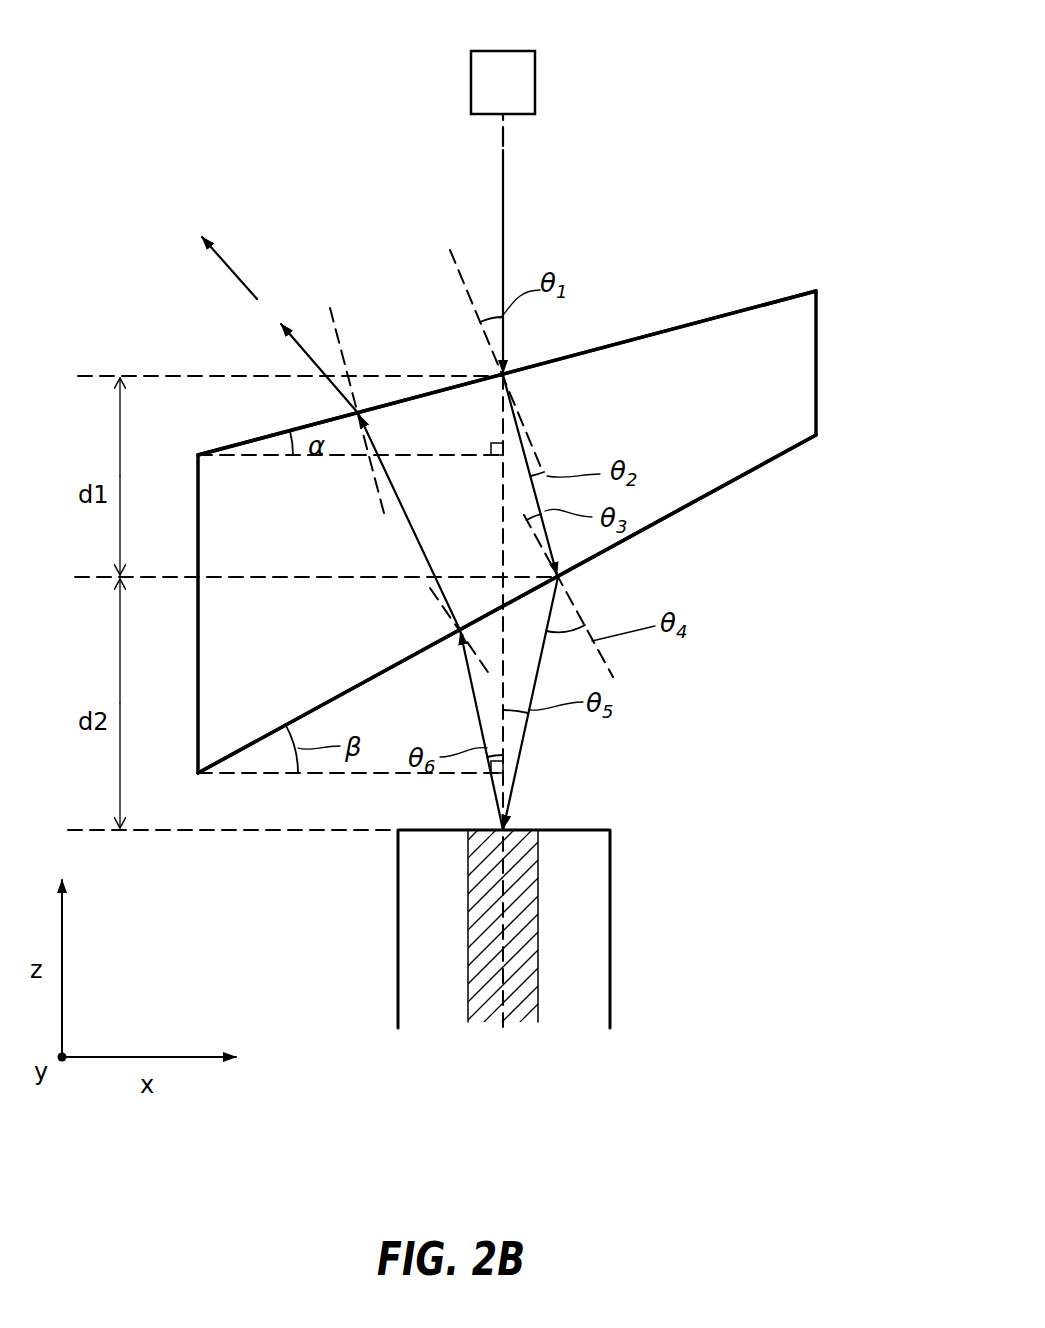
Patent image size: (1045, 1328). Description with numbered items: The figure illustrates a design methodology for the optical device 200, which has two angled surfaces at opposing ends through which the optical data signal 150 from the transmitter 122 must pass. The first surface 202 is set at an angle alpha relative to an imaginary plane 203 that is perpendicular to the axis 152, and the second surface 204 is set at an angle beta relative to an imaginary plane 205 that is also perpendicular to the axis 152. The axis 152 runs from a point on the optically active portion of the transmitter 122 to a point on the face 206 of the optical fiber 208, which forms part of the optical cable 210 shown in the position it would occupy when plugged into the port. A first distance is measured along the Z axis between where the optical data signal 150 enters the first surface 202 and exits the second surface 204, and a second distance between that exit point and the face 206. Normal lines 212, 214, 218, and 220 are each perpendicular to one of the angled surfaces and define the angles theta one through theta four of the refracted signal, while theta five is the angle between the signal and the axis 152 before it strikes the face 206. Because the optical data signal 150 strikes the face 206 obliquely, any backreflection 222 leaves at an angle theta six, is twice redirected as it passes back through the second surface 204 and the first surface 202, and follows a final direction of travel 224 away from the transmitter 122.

The transmitter 122 is at (517, 85).
The optical data signal 150 is at (505, 225).
The axis 152 is at (503, 458).
The optical device 200 is at (775, 360).
The first surface 202 is at (718, 317).
The plane 203 is at (268, 457).
The second surface 204 is at (725, 483).
The plane 205 is at (330, 774).
The face 206 is at (515, 830).
The optical fiber 208 is at (468, 943).
The optical cable 210 is at (610, 925).
The normal line 212 is at (458, 272).
The normal line 214 is at (600, 650).
The normal line 218 is at (437, 598).
The normal line 220 is at (345, 362).
The backreflection 222 is at (300, 345).
The direction of travel 224 is at (235, 278).